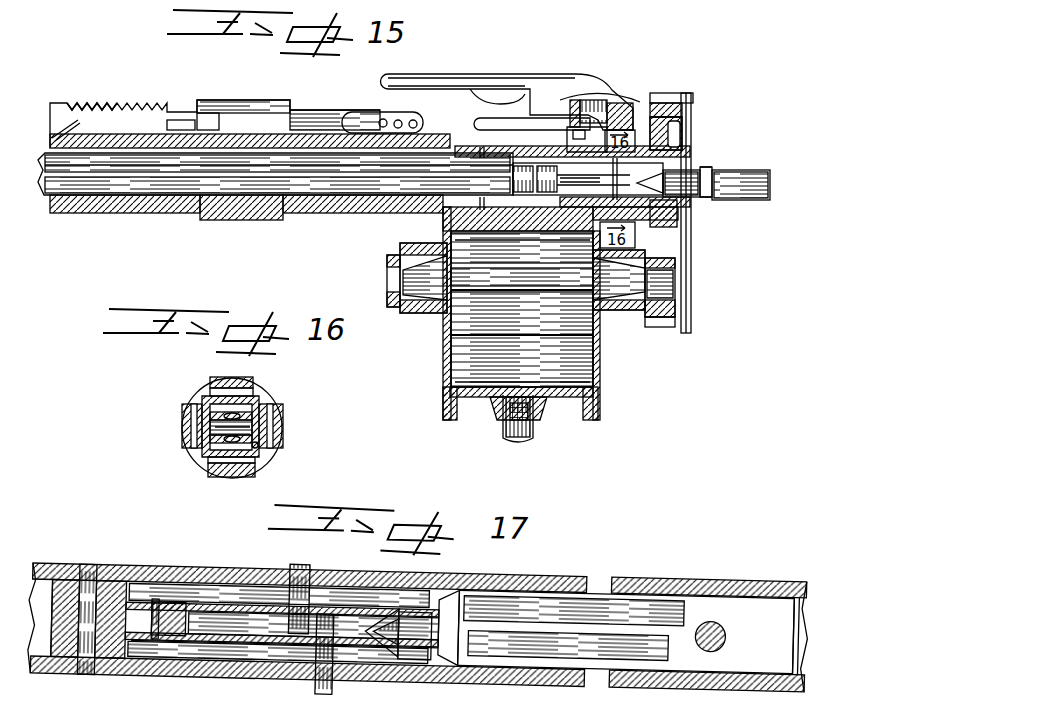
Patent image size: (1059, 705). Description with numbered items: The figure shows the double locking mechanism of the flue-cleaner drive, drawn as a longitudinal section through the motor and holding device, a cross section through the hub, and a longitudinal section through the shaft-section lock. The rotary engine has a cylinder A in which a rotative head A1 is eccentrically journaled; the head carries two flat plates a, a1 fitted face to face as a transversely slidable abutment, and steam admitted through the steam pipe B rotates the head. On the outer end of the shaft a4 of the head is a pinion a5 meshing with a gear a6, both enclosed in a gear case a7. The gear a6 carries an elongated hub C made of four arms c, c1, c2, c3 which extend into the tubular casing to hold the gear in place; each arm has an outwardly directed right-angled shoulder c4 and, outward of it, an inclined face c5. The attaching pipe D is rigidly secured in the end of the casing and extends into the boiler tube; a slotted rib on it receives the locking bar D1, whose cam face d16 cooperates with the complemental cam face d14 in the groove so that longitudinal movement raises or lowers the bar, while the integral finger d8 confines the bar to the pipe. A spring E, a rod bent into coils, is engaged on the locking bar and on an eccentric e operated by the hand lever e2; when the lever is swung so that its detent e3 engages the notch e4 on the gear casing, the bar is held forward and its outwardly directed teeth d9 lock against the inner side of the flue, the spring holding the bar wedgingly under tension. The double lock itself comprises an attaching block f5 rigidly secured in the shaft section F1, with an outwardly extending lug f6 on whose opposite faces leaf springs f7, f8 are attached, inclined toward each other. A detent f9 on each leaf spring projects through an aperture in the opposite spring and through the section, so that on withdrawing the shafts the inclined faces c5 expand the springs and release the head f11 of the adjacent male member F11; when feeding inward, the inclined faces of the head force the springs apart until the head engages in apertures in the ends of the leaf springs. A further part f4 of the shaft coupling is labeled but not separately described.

In FIG. 15, the attaching pipe D is at (233, 207).
In FIG. 15, the locking bar D1 is at (267, 110).
In FIG. 15, the finger d8 is at (70, 110).
In FIG. 15, the teeth d9 is at (102, 108).
In FIG. 15, the cam face d16 is at (180, 128).
In FIG. 15, the cam face d14 is at (198, 128).
In FIG. 15, the shaft section F1 is at (340, 180).
In FIG. 16, the shaft section F1 is at (263, 397).
In FIG. 17, the shaft section F1 is at (163, 576).
In FIG. 15, the male member F11 is at (690, 197).
In FIG. 17, the male member F11 is at (540, 595).
In FIG. 15, the hub C is at (650, 190).
In FIG. 15, the shoulder c4 is at (675, 275).
In FIG. 16, the shoulder c4 is at (252, 392).
In FIG. 15, the inclined faces c5 is at (687, 157).
In FIG. 16, the inclined faces c5 is at (215, 390).
In FIG. 15, the gear a6 is at (650, 117).
In FIG. 15, the notch e4 is at (692, 93).
In FIG. 15, the gear case a7 is at (677, 157).
In FIG. 15, the firing pin shoulder f4 is at (710, 173).
In FIG. 15, the spring E is at (435, 127).
In FIG. 15, the eccentric e is at (466, 111).
In FIG. 15, the hand lever e2 is at (503, 67).
In FIG. 15, the detent e3 is at (489, 105).
In FIG. 15, the cylinder A is at (593, 377).
In FIG. 15, the plate a is at (462, 278).
In FIG. 15, the plate a1 is at (430, 285).
In FIG. 15, the rotative head A1 is at (513, 257).
In FIG. 15, the shaft a4 is at (650, 300).
In FIG. 15, the pinion a5 is at (668, 328).
In FIG. 15, the steam pipe B is at (528, 440).
In FIG. 16, the hub arm c is at (182, 437).
In FIG. 16, the hub arm c1 is at (243, 382).
In FIG. 16, the hub arm c2 is at (283, 418).
In FIG. 16, the hub arm c3 is at (233, 470).
In FIG. 17, the attaching block f5 is at (107, 578).
In FIG. 16, the lug f6 is at (280, 433).
In FIG. 17, the lug f6 is at (183, 609).
In FIG. 16, the leaf spring f7 is at (263, 407).
In FIG. 17, the leaf spring f7 is at (227, 602).
In FIG. 16, the leaf spring f8 is at (257, 447).
In FIG. 17, the leaf spring f8 is at (240, 638).
In FIG. 17, the detent f9 is at (297, 567).
In FIG. 17, the head of male member f11 is at (400, 598).